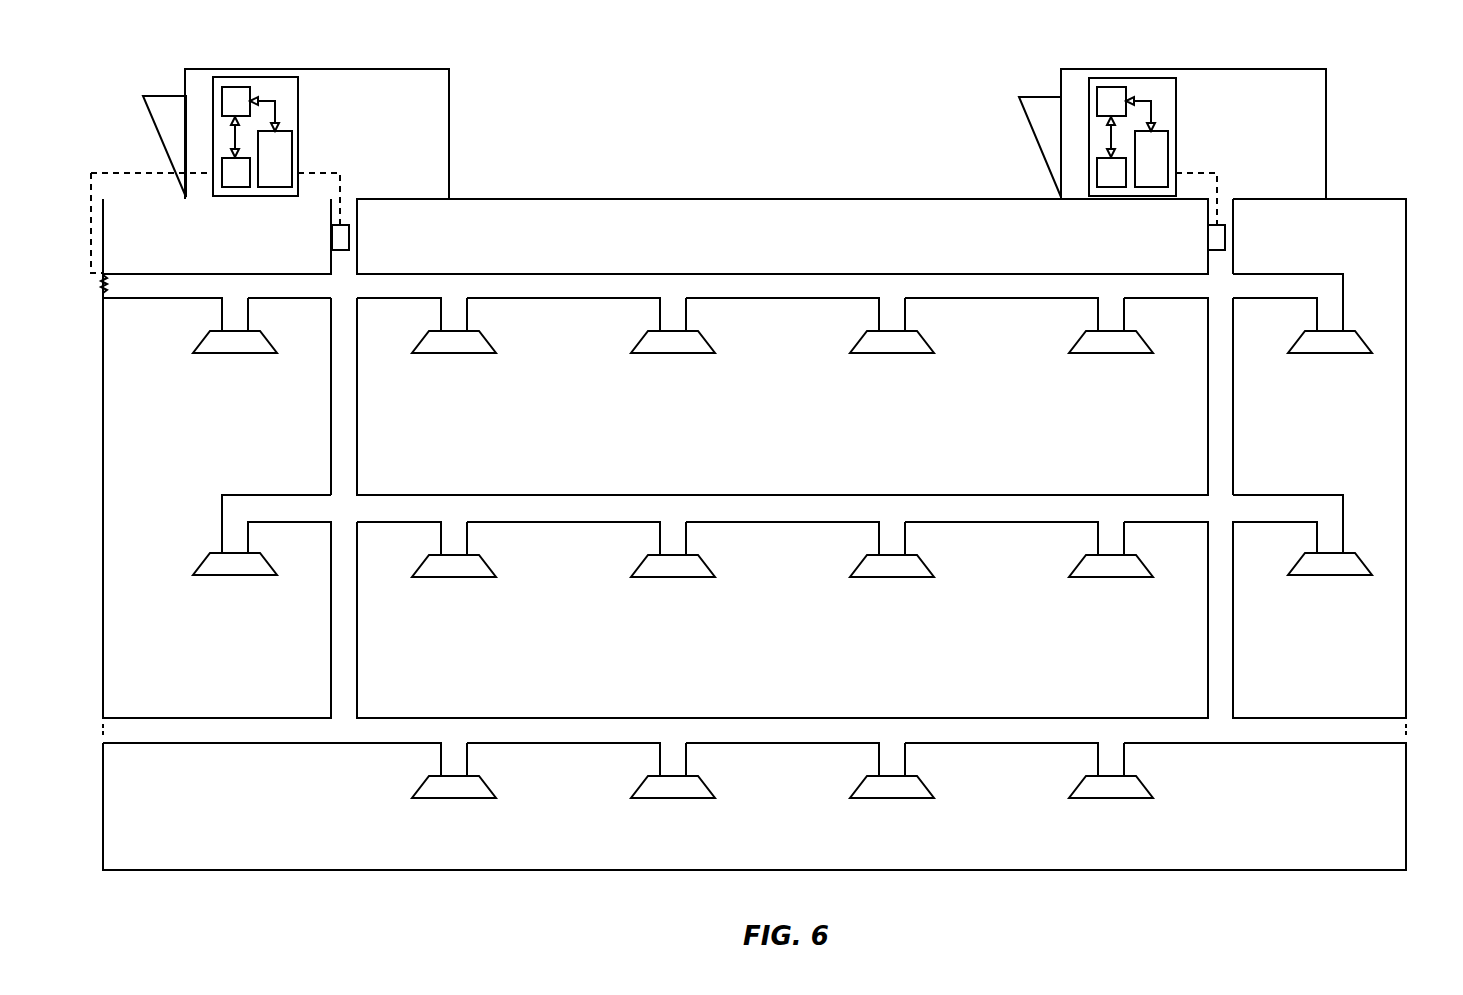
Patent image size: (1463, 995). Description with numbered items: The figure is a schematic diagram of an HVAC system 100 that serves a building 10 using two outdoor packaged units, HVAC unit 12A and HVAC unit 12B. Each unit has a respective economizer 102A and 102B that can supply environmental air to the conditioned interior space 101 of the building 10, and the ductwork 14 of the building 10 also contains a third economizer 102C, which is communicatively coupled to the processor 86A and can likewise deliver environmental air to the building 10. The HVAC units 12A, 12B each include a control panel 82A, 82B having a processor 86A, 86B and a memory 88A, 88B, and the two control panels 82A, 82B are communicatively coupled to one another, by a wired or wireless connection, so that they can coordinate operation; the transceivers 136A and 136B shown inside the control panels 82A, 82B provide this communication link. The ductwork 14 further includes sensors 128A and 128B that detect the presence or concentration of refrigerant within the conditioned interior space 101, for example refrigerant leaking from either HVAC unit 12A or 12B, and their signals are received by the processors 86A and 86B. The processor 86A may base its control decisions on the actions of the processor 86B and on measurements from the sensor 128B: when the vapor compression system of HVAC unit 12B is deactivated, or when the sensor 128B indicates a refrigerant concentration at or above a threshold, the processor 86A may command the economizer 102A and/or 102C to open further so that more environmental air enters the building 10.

The HVAC system 100 is at (1390, 73).
The building 10 is at (797, 199).
The ductwork 14 is at (785, 274).
The conditioned interior space 101 is at (782, 509).
The HVAC unit 12A is at (450, 137).
The HVAC unit 12B is at (1327, 137).
The control panel 82A is at (298, 108).
The control panel 82B is at (1176, 108).
The processor 86A is at (238, 87).
The processor 86B is at (1113, 87).
The memory 88A is at (235, 187).
The memory 88B is at (1110, 187).
The first transceiver 136A is at (292, 155).
The second transceiver 136B is at (1168, 155).
The sensor 128A is at (350, 233).
The sensor 128B is at (1226, 233).
The economizer 102A is at (165, 97).
The economizer 102B is at (1040, 97).
The economizer 102C is at (107, 288).